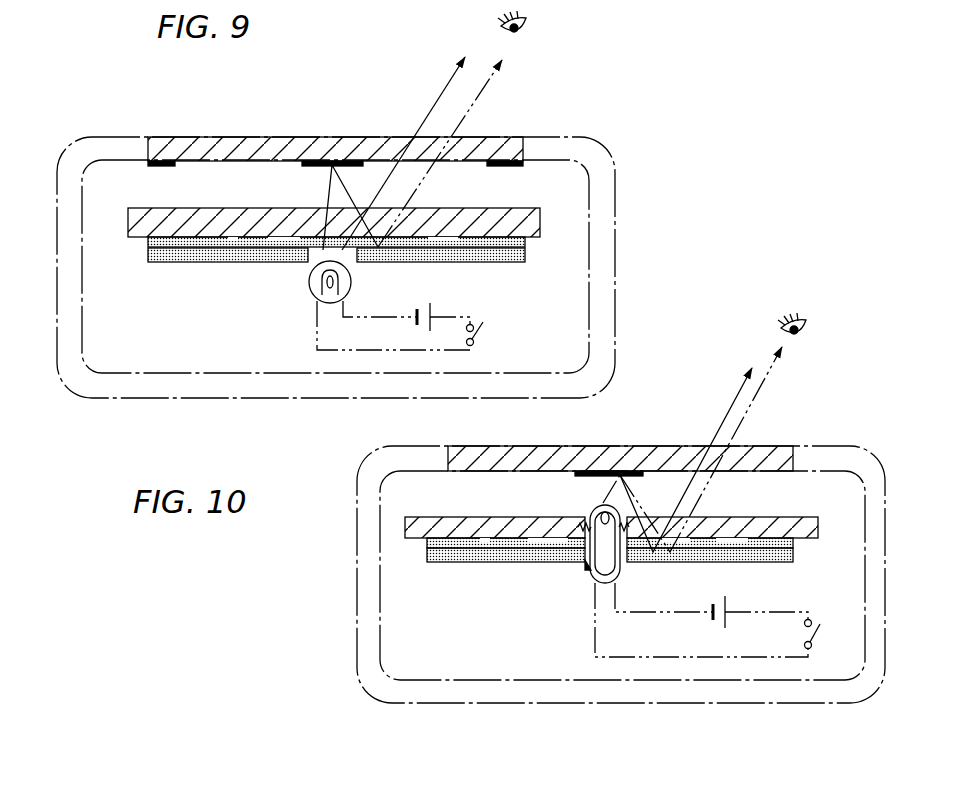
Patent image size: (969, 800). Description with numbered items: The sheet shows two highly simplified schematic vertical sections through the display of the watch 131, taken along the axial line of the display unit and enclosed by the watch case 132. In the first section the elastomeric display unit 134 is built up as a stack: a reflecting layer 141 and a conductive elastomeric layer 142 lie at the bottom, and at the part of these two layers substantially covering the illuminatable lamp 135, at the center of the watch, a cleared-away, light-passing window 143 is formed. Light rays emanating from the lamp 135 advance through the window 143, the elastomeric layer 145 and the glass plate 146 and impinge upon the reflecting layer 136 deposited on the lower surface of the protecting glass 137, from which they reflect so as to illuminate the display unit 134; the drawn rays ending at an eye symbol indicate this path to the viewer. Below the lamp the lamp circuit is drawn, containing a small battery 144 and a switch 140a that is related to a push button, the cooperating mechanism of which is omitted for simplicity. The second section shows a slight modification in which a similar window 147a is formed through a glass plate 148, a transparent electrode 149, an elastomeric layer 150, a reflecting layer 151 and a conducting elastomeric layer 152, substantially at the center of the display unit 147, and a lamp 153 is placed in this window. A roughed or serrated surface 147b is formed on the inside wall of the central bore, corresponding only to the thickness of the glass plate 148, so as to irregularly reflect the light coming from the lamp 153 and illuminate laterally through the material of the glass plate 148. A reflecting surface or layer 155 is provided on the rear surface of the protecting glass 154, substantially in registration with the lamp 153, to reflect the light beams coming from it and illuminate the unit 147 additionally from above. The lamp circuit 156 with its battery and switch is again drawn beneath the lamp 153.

In FIG. 9, the watch 131 is at (622, 207).
In FIG. 9, the watch case 132 is at (592, 155).
In FIG. 9, the elastomeric display unit 134 is at (117, 225).
In FIG. 9, the illuminatable lamp 135 is at (310, 280).
In FIG. 9, the reflecting layer 136 is at (328, 163).
In FIG. 9, the protecting glass 137 is at (240, 148).
In FIG. 9, the switch 140a is at (486, 331).
In FIG. 9, the reflecting layer 141 is at (527, 246).
In FIG. 9, the conductive elastomeric layer 142 is at (513, 262).
In FIG. 9, the light-passing window 143 is at (350, 262).
In FIG. 9, the small battery 144 is at (432, 308).
In FIG. 9, the elastomeric layer 145 is at (203, 262).
In FIG. 9, the glass plate 146 is at (237, 220).
In FIG. 10, the display unit 147 is at (397, 528).
In FIG. 10, the window 147a is at (585, 570).
In FIG. 10, the roughed or serrated surface 147b is at (585, 513).
In FIG. 10, the glass plate 148 is at (450, 525).
In FIG. 10, the transparent electrode 149 is at (537, 565).
In FIG. 10, the elastomeric layer 150 is at (428, 543).
In FIG. 10, the reflecting layer 151 is at (795, 552).
In FIG. 10, the conducting elastomeric layer 152 is at (743, 562).
In FIG. 10, the lamp 153 is at (620, 570).
In FIG. 10, the protecting glass 154 is at (557, 458).
In FIG. 10, the reflecting surface or layer 155 is at (617, 467).
In FIG. 10, the lamp circuit 156 is at (707, 620).